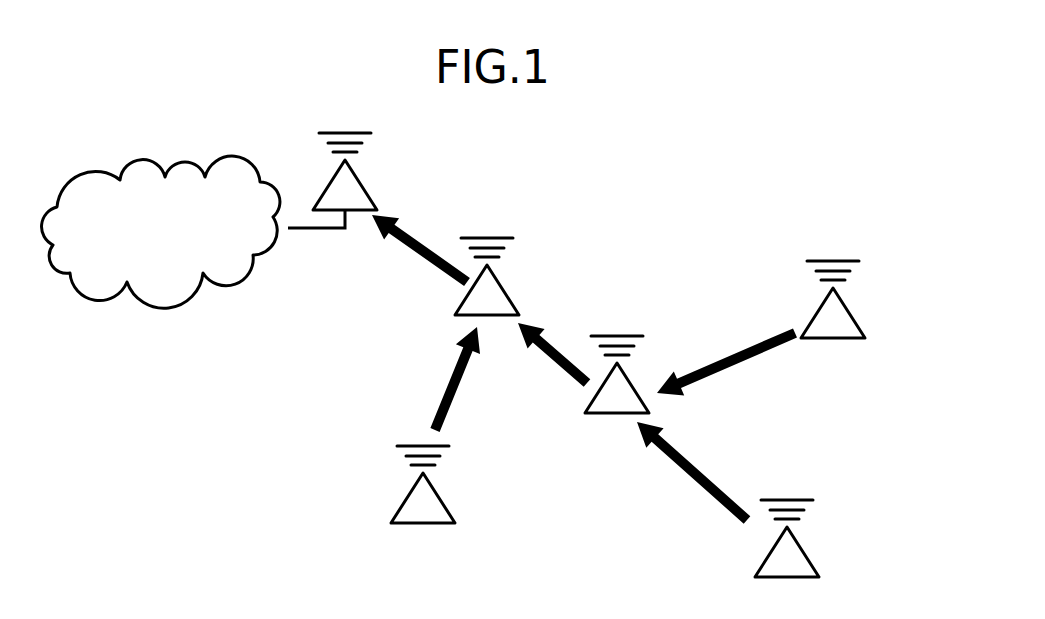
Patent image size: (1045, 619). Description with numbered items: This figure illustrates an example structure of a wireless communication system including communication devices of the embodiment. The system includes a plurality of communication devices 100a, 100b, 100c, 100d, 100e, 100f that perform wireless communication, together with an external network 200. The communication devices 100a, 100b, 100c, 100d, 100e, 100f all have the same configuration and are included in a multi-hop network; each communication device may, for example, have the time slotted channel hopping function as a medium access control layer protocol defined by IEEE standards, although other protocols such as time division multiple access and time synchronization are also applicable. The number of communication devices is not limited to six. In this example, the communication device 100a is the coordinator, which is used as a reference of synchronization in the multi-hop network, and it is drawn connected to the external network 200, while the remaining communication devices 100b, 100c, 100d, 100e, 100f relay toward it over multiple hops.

The external network 200 is at (186, 163).
The communication device 100a is at (361, 185).
The communication device 100b is at (503, 290).
The communication device 100c is at (440, 498).
The communication device 100d is at (616, 413).
The communication device 100e is at (851, 313).
The communication device 100f is at (804, 552).